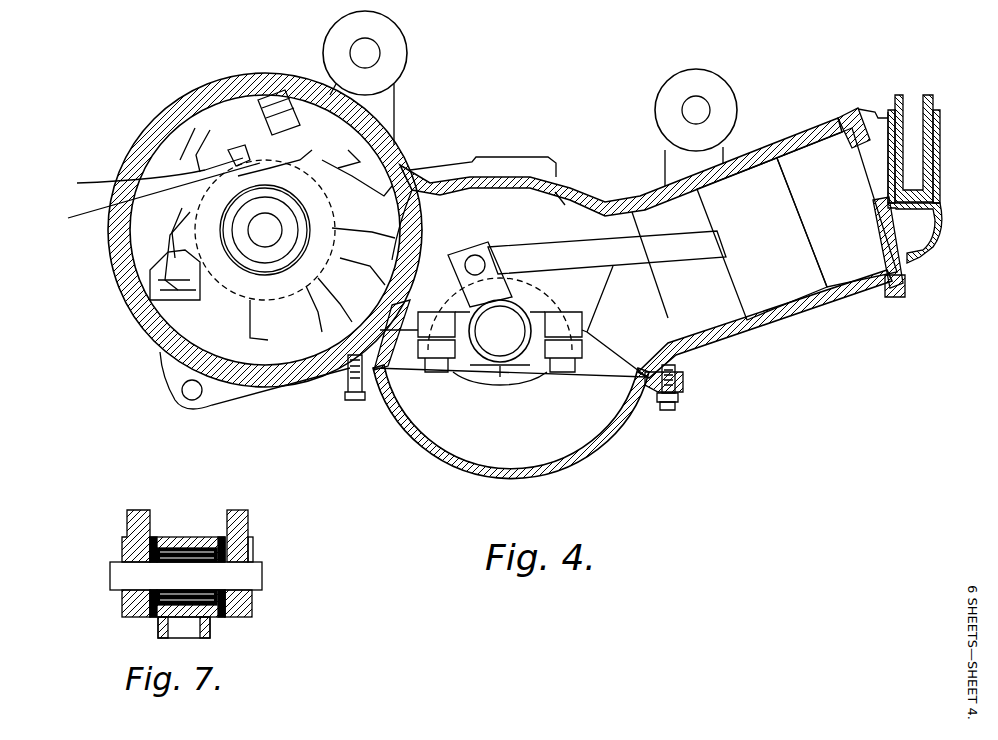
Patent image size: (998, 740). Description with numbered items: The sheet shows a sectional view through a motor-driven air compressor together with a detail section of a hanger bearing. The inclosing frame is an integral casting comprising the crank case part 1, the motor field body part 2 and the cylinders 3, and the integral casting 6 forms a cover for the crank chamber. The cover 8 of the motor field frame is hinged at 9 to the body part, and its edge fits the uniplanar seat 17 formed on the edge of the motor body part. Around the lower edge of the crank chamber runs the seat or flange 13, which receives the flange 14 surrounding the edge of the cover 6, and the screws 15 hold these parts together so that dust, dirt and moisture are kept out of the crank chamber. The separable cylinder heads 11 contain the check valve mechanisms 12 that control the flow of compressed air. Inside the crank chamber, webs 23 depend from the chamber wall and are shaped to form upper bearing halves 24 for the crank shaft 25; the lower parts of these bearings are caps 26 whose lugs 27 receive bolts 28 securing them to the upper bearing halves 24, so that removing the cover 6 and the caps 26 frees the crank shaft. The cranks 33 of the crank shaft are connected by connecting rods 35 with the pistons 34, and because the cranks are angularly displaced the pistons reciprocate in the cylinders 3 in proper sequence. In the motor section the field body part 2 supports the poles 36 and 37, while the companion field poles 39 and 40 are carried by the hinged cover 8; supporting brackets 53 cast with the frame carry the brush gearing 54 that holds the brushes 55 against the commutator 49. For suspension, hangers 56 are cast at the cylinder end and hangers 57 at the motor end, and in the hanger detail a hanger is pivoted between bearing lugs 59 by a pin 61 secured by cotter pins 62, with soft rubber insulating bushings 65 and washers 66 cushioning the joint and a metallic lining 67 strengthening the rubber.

In FIG. 4, the crank case part 1 is at (565, 190).
In FIG. 4, the motor field body part 2 is at (397, 146).
In FIG. 4, the cylinders 3 is at (853, 294).
In FIG. 4, the cover for the crank chamber 6 is at (596, 443).
In FIG. 4, the cover of the motor field frame 8 is at (167, 120).
In FIG. 4, the hinge 9 is at (189, 411).
In FIG. 4, the cylinder heads 11 is at (920, 282).
In FIG. 4, the check valve mechanisms 12 is at (913, 163).
In FIG. 4, the seat or flange 13 is at (676, 372).
In FIG. 4, the flange 14 is at (679, 397).
In FIG. 4, the screws 15 is at (668, 411).
In FIG. 4, the uniplanar seat 17 is at (173, 386).
In FIG. 4, the webs 23 is at (593, 296).
In FIG. 4, the upper bearing halves 24 is at (520, 300).
In FIG. 4, the crank shaft 25 is at (497, 345).
In FIG. 4, the caps 26 is at (502, 378).
In FIG. 4, the lugs 27 is at (457, 348).
In FIG. 4, the bolts 28 is at (445, 292).
In FIG. 4, the cranks 33 is at (500, 278).
In FIG. 4, the pistons 34 is at (786, 300).
In FIG. 4, the connecting rods 35 is at (676, 254).
In FIG. 4, the pole 36 is at (377, 177).
In FIG. 4, the pole 37 is at (297, 348).
In FIG. 4, the companion field pole 39 is at (212, 112).
In FIG. 4, the companion field pole 40 is at (150, 276).
In FIG. 4, the commutator 49 is at (332, 268).
In FIG. 4, the supporting brackets 53 is at (296, 125).
In FIG. 4, the brush gearing 54 is at (147, 169).
In FIG. 4, the brushes 55 is at (176, 189).
In FIG. 4, the hangers 56 is at (720, 95).
In FIG. 7, the hangers 56 is at (210, 628).
In FIG. 4, the hangers 57 is at (392, 50).
In FIG. 7, the bearing lugs 59 is at (130, 612).
In FIG. 7, the pin 61 is at (243, 581).
In FIG. 7, the cotter pins 62 is at (253, 560).
In FIG. 7, the insulating bushings 65 is at (178, 540).
In FIG. 7, the washers 66 is at (250, 545).
In FIG. 7, the metallic lining 67 is at (150, 545).